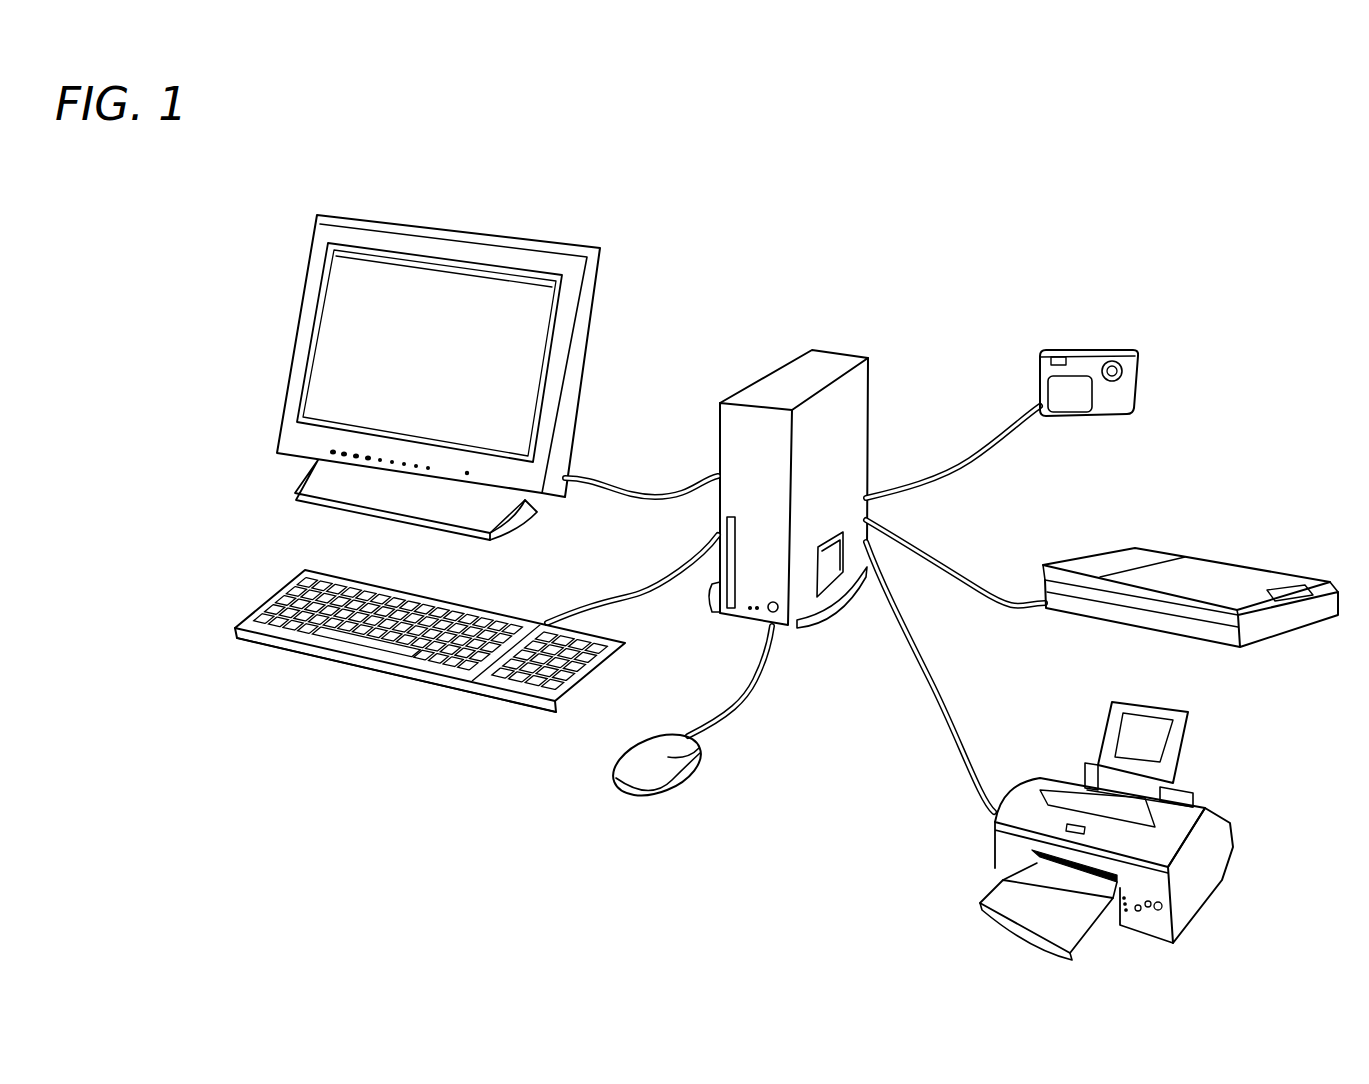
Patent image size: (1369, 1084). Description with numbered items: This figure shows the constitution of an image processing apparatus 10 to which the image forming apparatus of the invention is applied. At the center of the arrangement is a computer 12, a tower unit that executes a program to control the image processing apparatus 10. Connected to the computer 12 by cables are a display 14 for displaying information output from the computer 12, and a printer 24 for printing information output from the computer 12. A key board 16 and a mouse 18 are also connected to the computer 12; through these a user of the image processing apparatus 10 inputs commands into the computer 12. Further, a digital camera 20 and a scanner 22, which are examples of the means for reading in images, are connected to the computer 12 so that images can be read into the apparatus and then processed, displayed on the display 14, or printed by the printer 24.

The image processing apparatus 10 is at (906, 223).
The computer 12 is at (843, 350).
The display 14 is at (498, 232).
The key board 16 is at (515, 613).
The mouse 18 is at (700, 753).
The digital camera 20 is at (1092, 345).
The scanner 22 is at (1185, 557).
The printer 24 is at (1212, 808).